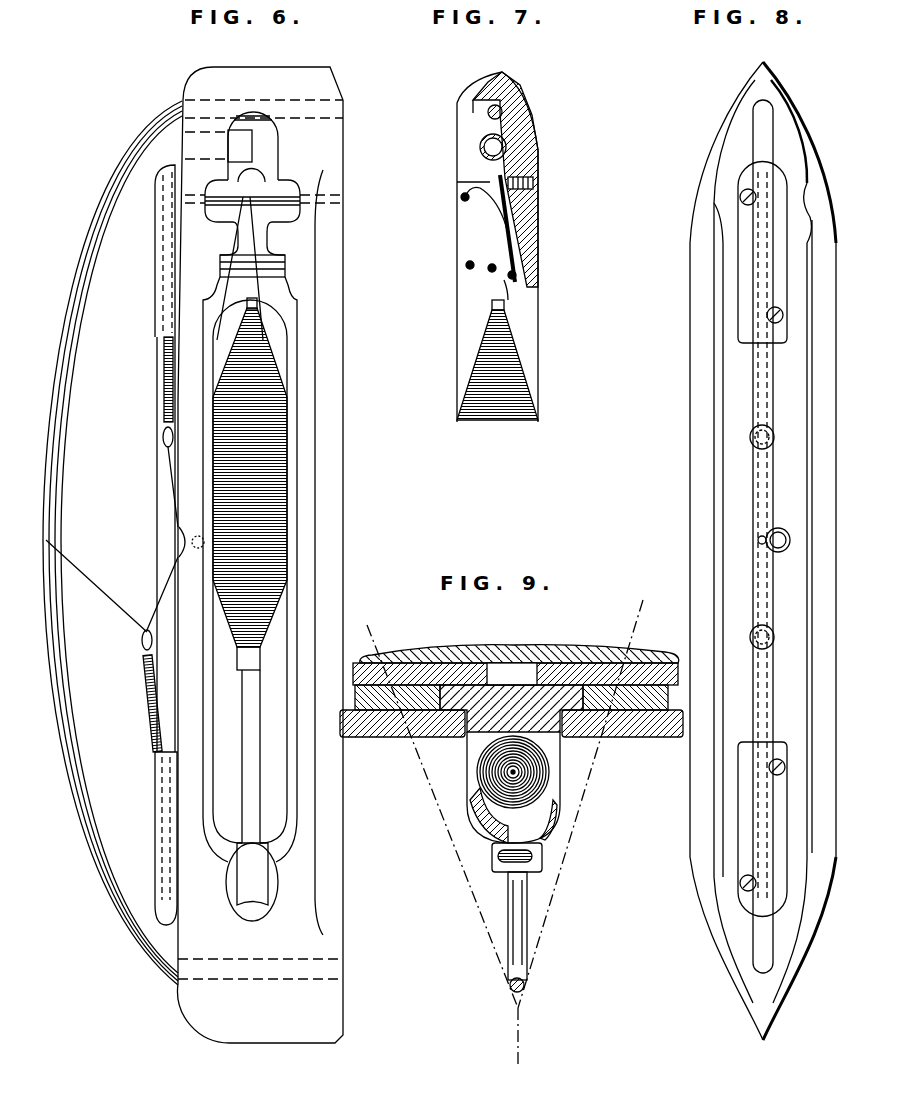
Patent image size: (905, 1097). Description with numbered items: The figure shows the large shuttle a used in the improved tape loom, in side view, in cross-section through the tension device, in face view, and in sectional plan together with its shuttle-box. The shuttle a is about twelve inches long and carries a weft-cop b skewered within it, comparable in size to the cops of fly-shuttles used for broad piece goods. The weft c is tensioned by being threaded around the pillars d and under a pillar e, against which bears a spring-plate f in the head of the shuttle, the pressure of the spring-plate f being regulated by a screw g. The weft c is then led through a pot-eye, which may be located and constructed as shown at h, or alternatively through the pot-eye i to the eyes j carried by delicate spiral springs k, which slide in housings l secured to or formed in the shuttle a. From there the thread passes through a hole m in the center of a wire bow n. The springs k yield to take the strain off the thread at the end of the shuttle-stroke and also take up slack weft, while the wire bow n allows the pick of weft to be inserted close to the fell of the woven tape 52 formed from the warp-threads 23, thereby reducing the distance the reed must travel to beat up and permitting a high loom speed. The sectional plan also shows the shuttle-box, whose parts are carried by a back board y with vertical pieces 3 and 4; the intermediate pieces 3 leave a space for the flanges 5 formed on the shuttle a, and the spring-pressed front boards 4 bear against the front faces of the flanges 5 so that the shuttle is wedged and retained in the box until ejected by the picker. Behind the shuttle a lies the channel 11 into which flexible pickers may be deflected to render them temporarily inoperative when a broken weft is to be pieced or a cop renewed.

In FIG. 6, the shuttle a is at (330, 150).
In FIG. 7, the shuttle a is at (465, 327).
In FIG. 8, the shuttle a is at (730, 487).
In FIG. 9, the shuttle a is at (550, 795).
In FIG. 6, the weft-cop b is at (250, 599).
In FIG. 7, the weft-cop b is at (500, 362).
In FIG. 9, the weft-cop b is at (493, 786).
In FIG. 6, the weft c is at (258, 303).
In FIG. 7, the weft c is at (443, 300).
In FIG. 6, the pillars d is at (280, 264).
In FIG. 7, the pillars d is at (470, 268).
In FIG. 6, the pillar e is at (287, 198).
In FIG. 7, the pillar e is at (461, 197).
In FIG. 7, the spring-plate f is at (495, 236).
In FIG. 7, the screw g is at (534, 183).
In FIG. 6, the pot-eye h is at (178, 542).
In FIG. 8, the pot-eye h is at (783, 530).
In FIG. 9, the pot-eye h is at (540, 840).
In FIG. 6, the pot-eye i is at (252, 145).
In FIG. 7, the pot-eye i is at (476, 149).
In FIG. 6, the eyes j is at (158, 440).
In FIG. 8, the eyes j is at (750, 438).
In FIG. 9, the eyes j is at (497, 855).
In FIG. 6, the spiral springs k is at (156, 381).
In FIG. 8, the spiral springs k is at (760, 365).
In FIG. 6, the housings l is at (149, 276).
In FIG. 8, the housings l is at (793, 181).
In FIG. 9, the housings l is at (528, 875).
In FIG. 6, the hole m is at (48, 540).
In FIG. 8, the hole m is at (758, 543).
In FIG. 9, the hole m is at (510, 1003).
In FIG. 6, the wire bow n is at (70, 420).
In FIG. 7, the wire bow n is at (507, 103).
In FIG. 8, the wire bow n is at (770, 462).
In FIG. 9, the wire bow n is at (527, 930).
In FIG. 9, the vertical pieces 3 is at (402, 655).
In FIG. 9, the vertical pieces 4 is at (440, 736).
In FIG. 6, the flanges 5 is at (335, 533).
In FIG. 8, the flanges 5 is at (700, 262).
In FIG. 9, the back board y is at (448, 657).
In FIG. 9, the opening 11 is at (505, 665).
In FIG. 9, the warp-threads 23 is at (478, 928).
In FIG. 9, the woven tape 52 is at (524, 1038).